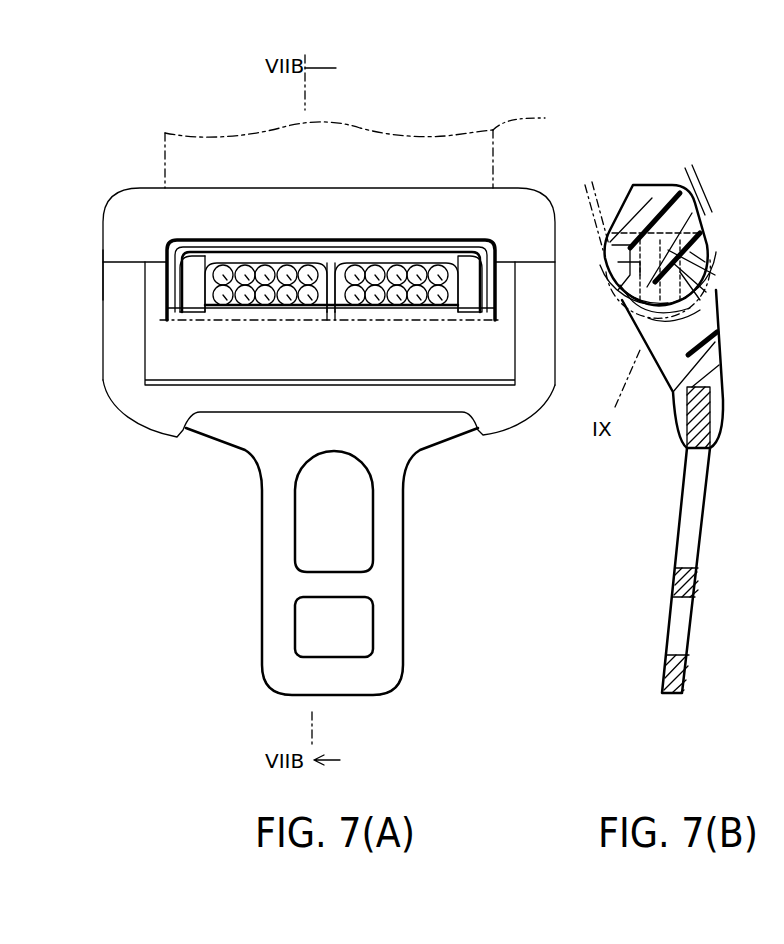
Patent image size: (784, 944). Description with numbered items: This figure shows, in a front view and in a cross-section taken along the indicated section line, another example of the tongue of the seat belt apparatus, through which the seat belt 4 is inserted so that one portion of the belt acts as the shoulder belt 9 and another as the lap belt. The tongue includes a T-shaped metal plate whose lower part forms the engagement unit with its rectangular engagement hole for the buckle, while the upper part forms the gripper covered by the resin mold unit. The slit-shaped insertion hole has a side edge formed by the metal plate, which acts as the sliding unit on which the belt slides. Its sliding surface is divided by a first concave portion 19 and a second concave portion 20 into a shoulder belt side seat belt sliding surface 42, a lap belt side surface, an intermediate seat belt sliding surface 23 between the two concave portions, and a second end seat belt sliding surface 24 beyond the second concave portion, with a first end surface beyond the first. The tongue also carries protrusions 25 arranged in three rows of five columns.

The seat belt 4 is at (380, 125).
The shoulder belt 9 is at (698, 192).
The first concave portion 19 is at (267, 270).
The second concave portion 20 is at (392, 270).
The intermediate seat belt sliding surface 23 is at (328, 300).
The second end seat belt sliding surface 24 is at (470, 295).
The protrusions 25 is at (308, 300).
The shoulder belt side seat belt sliding surface 42 is at (716, 276).